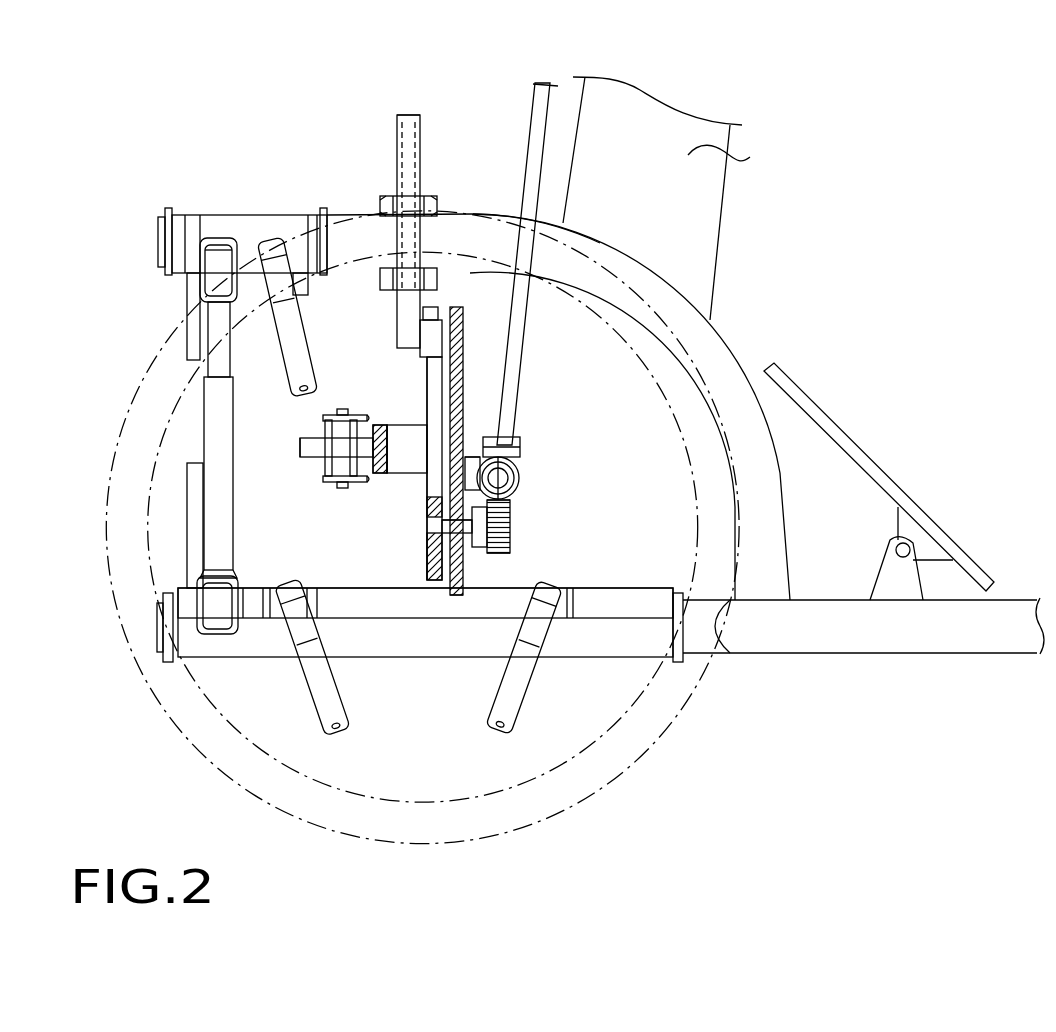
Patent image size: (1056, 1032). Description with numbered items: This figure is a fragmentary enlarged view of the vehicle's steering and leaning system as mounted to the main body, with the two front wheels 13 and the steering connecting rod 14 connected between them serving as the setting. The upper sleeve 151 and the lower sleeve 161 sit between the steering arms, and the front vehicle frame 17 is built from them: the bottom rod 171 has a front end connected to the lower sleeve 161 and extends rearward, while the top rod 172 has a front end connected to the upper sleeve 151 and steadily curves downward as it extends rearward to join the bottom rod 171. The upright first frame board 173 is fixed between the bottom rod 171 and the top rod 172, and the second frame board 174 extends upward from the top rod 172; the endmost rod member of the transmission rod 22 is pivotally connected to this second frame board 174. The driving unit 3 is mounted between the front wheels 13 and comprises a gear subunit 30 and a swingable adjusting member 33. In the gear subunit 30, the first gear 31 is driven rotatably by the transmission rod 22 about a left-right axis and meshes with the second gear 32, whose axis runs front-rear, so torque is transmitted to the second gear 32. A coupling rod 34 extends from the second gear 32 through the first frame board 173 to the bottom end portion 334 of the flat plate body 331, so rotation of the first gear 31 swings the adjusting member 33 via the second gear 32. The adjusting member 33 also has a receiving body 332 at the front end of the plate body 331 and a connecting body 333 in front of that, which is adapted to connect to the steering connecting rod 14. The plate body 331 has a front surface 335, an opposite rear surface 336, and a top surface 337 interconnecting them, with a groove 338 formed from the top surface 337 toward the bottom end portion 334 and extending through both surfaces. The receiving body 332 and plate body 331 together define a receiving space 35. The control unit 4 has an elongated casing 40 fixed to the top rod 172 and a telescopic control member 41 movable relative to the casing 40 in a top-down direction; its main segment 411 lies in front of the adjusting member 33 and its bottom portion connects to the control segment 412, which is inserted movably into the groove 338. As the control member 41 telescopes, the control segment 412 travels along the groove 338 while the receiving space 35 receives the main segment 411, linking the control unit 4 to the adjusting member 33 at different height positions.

The driving unit 3 is at (533, 525).
The control unit 4 is at (380, 105).
The front wheels 13 is at (125, 518).
The steering connecting rod 14 is at (327, 458).
The front vehicle frame 17 is at (950, 664).
The transmission rod 22 is at (518, 132).
The gear subunit 30 is at (750, 705).
The first gear 31 is at (508, 490).
The second gear 32 is at (513, 532).
The adjusting member 33 is at (393, 535).
The coupling rod 34 is at (497, 567).
The receiving space 35 is at (400, 462).
The casing 40 is at (412, 117).
The control member 41 is at (384, 313).
The upper sleeve 151 is at (262, 228).
The lower sleeve 161 is at (243, 647).
The bottom rod 171 is at (870, 630).
The top rod 172 is at (662, 296).
The first frame board 173 is at (458, 597).
The second frame board 174 is at (742, 153).
The plate body 331 is at (397, 545).
The receiving body 332 is at (373, 433).
The connecting body 333 is at (312, 450).
The bottom end portion 334 is at (445, 580).
The front surface 335 is at (490, 437).
The rear surface 336 is at (443, 368).
The top surface 337 is at (433, 300).
The groove 338 is at (435, 390).
The main segment 411 is at (376, 300).
The control segment 412 is at (430, 337).